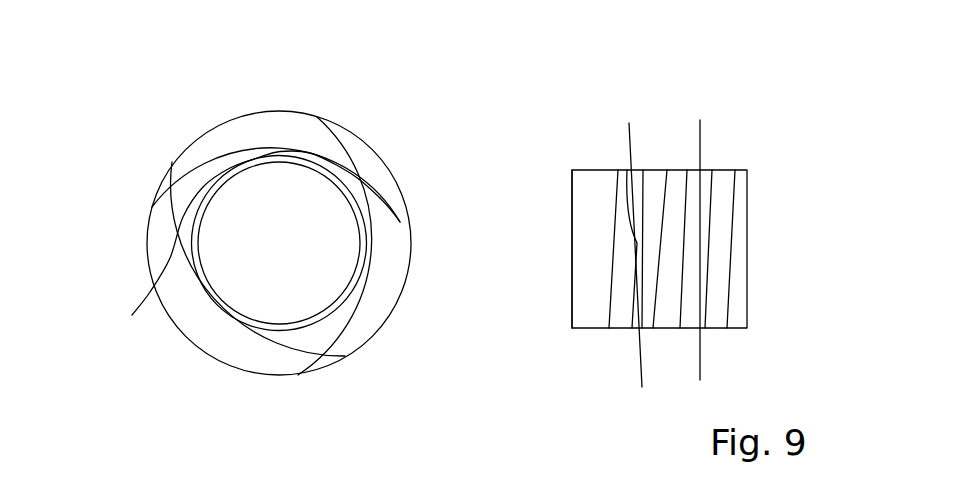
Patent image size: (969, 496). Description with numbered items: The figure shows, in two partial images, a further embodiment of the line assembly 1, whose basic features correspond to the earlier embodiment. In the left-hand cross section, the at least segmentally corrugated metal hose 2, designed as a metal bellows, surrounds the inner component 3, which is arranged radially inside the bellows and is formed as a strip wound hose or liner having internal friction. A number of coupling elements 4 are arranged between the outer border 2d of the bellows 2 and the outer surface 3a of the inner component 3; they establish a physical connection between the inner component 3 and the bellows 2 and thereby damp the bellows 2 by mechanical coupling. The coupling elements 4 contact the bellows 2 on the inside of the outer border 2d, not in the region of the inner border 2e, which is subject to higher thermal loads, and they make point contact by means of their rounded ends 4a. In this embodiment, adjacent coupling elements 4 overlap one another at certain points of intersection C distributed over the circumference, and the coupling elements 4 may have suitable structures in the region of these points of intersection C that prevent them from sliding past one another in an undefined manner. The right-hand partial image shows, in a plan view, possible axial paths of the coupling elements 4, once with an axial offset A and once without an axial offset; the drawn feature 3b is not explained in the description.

The line assembly 1 is at (398, 93).
The metal hose 2 is at (272, 82).
The outer border 2d is at (215, 125).
The inner border 2e is at (295, 150).
The inner component 3 is at (270, 350).
The outer surface 3a is at (592, 316).
The ring slot 3b is at (610, 318).
The coupling element 4 is at (748, 110).
The end 4a is at (440, 194).
The axial offset A is at (620, 254).
The point of intersection C is at (147, 170).